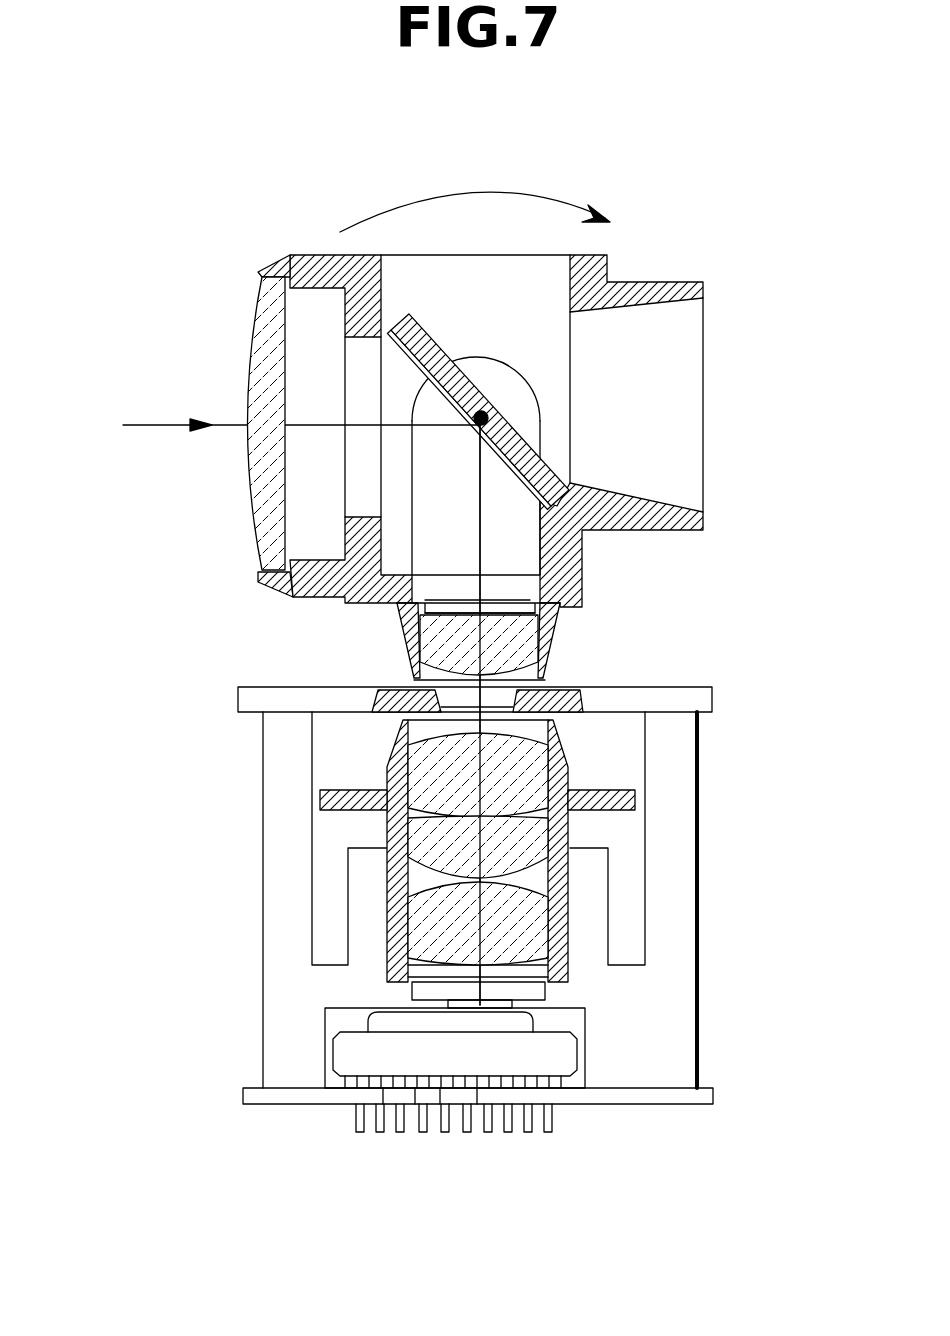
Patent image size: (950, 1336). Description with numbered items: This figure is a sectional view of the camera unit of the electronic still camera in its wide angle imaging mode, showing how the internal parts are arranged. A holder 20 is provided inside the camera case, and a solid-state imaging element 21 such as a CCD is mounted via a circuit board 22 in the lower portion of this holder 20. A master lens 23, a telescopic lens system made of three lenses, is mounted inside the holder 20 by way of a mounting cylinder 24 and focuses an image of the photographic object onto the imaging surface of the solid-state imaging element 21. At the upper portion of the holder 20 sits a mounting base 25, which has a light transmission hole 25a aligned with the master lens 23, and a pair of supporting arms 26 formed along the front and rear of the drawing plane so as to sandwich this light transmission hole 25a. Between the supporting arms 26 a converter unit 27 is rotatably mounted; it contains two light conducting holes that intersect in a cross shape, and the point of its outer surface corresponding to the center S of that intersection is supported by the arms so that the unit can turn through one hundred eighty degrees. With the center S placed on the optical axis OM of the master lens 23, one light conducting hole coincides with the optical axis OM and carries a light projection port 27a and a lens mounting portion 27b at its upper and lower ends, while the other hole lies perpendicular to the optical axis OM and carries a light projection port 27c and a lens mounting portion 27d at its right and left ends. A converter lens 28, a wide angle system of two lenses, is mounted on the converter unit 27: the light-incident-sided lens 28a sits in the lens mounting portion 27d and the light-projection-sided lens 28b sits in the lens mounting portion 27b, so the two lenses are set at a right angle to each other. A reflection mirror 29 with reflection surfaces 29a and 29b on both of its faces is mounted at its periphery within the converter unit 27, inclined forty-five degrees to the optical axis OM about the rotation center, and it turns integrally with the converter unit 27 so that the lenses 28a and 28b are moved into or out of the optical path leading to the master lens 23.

The holder 20 is at (468, 800).
The solid-state imaging element 21 is at (557, 1053).
The circuit board 22 is at (320, 1097).
The master lens 23 is at (445, 915).
The mounting cylinder 24 is at (560, 882).
The mounting base 25 is at (418, 673).
The light transmission hole 25a is at (503, 700).
The supporting arms 26 is at (520, 372).
The converter unit 27 is at (503, 401).
The light projection port 27a is at (398, 257).
The lens mounting portion 27b is at (412, 630).
The light projection port 27c is at (672, 360).
The lens mounting portion 27d is at (293, 257).
The converter lens 28 is at (278, 476).
The light-incident-sided lens 28a is at (247, 474).
The light-projection-sided lens 28b is at (400, 615).
The reflection mirror 29 is at (472, 312).
The reflection surface 29a is at (428, 380).
The reflection surface 29b is at (432, 330).
The center of the intersecting portion S is at (482, 410).
The optical axis OM is at (478, 765).